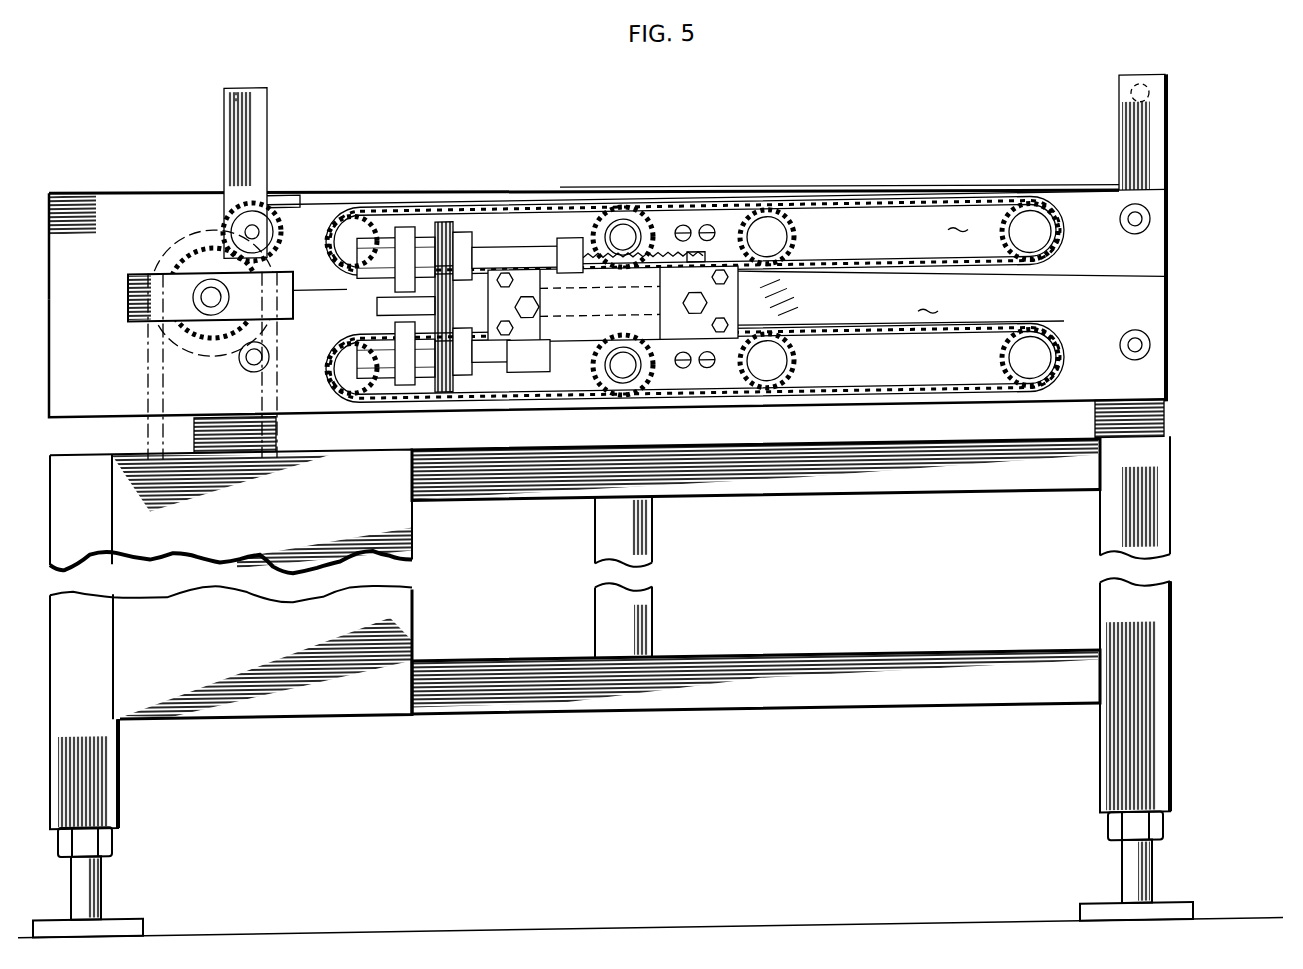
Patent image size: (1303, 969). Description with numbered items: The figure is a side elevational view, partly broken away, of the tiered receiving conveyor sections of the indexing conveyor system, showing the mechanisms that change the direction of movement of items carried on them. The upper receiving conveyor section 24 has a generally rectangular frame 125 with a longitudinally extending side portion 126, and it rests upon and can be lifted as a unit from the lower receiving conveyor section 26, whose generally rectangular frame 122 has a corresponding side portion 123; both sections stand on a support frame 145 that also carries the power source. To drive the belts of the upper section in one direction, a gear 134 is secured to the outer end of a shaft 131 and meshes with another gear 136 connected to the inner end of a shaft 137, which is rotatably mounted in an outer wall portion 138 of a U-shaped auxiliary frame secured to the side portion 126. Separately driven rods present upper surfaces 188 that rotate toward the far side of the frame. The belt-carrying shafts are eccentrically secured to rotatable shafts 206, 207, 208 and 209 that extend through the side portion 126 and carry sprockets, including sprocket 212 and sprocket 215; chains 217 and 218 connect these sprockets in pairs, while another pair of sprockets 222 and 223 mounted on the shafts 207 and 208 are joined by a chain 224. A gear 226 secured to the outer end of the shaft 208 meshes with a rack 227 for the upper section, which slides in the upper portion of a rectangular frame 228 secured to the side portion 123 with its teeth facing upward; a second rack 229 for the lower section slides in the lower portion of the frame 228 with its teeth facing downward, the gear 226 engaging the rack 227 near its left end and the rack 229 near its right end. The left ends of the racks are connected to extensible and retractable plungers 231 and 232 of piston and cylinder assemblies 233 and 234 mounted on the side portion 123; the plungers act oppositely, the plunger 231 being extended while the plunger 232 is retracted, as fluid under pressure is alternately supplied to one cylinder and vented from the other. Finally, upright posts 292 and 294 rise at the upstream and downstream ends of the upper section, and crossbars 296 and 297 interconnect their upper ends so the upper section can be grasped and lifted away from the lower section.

The upper receiving conveyor section 24 is at (1168, 266).
The lower receiving conveyor section 26 is at (1168, 329).
The frame 122 is at (1068, 294).
The side portion 123 is at (926, 298).
The frame 125 is at (150, 398).
The side portion 126 is at (956, 216).
The shaft 131 is at (252, 236).
The gear 134 is at (288, 201).
The gear 136 is at (215, 259).
The shaft 137 is at (200, 301).
The outer wall portion 138 is at (138, 281).
The support frame 145 is at (1174, 511).
The upper surfaces 188 is at (833, 206).
The rotatable shaft 206 is at (1040, 246).
The rotatable shaft 207 is at (787, 358).
The rotatable shaft 208 is at (623, 224).
The rotatable shaft 209 is at (352, 243).
The sprocket 212 is at (1005, 255).
The sprocket 215 is at (340, 228).
The chain 217 is at (920, 216).
The chain 218 is at (513, 213).
The sprocket 222 is at (778, 253).
The sprocket 223 is at (617, 231).
The chain 224 is at (700, 216).
The gear 226 is at (652, 224).
The rack 227 is at (668, 269).
The rectangular frame 228 is at (745, 314).
The rack 229 is at (585, 346).
The plunger 231 is at (497, 251).
The plunger 232 is at (520, 366).
The piston and cylinder assembly 233 is at (360, 306).
The piston and cylinder assembly 234 is at (365, 327).
The upright post 292 is at (1160, 170).
The upright post 294 is at (262, 134).
The crossbar 296 is at (1140, 93).
The crossbar 297 is at (236, 86).